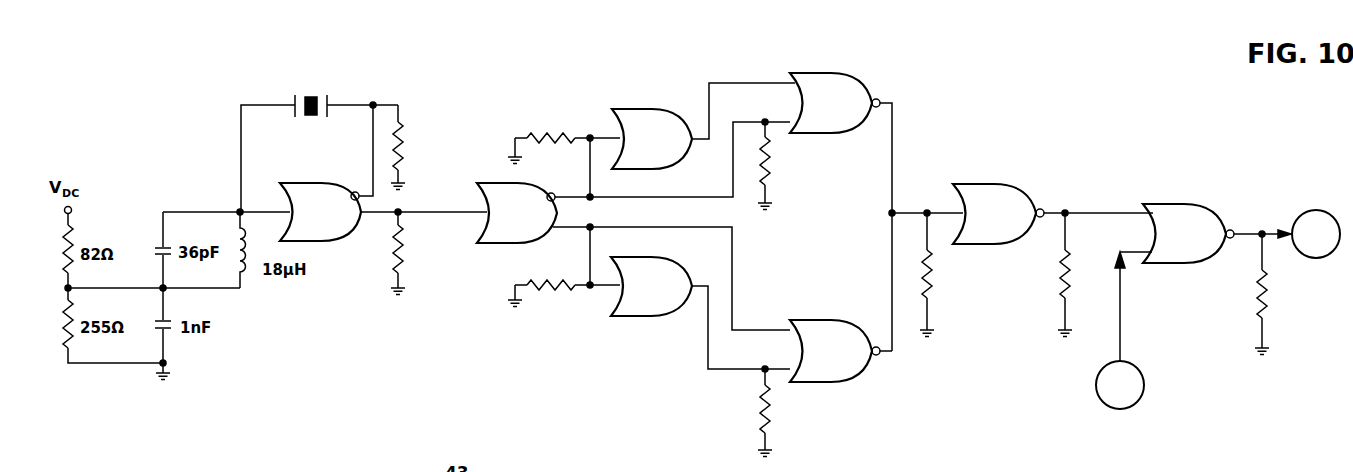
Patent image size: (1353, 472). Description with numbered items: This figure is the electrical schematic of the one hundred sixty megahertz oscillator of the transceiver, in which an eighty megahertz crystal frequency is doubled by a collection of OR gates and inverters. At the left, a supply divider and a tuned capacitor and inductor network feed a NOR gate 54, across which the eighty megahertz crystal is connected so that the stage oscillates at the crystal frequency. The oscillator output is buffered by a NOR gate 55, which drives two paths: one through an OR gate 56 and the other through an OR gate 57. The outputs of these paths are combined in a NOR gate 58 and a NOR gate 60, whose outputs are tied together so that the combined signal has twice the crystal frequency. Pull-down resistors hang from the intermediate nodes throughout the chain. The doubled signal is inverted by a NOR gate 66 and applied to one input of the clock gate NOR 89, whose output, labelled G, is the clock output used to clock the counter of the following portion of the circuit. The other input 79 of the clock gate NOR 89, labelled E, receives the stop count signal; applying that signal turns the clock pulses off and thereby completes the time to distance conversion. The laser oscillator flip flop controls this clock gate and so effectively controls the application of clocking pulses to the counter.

The NOR gate 54 is at (332, 98).
The NOR gate 55 is at (497, 183).
The OR gate 56 is at (628, 108).
The OR gate 57 is at (625, 316).
The NOR gate 58 is at (810, 73).
The NOR gate 60 is at (805, 320).
The NOR gate 66 is at (978, 185).
The clock gate NOR 89 is at (1163, 204).
The input 79 is at (1120, 313).